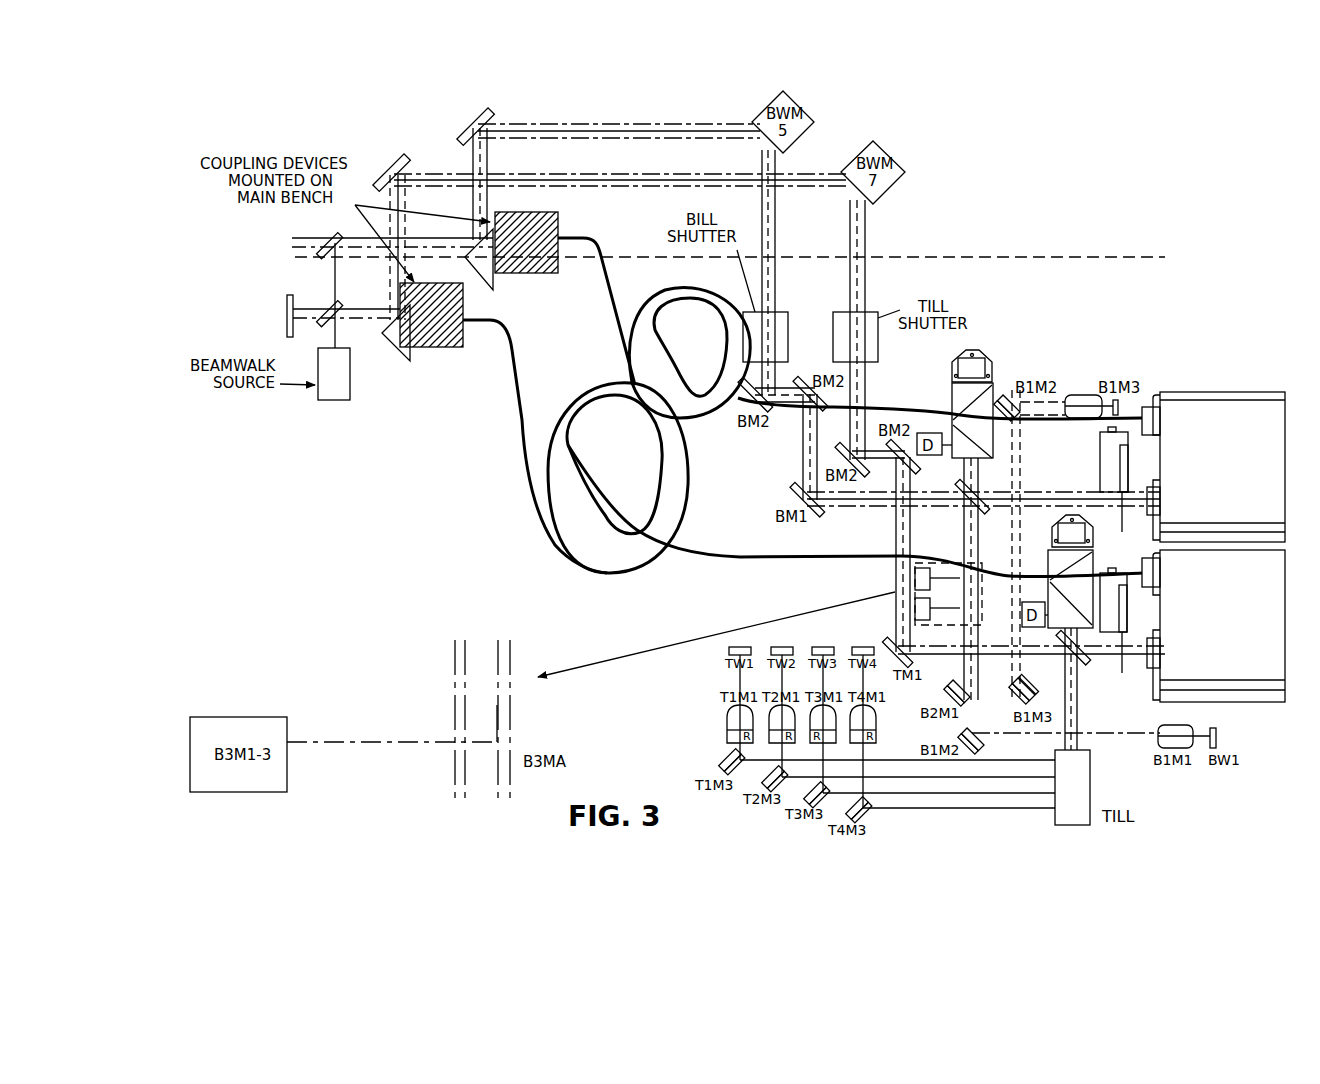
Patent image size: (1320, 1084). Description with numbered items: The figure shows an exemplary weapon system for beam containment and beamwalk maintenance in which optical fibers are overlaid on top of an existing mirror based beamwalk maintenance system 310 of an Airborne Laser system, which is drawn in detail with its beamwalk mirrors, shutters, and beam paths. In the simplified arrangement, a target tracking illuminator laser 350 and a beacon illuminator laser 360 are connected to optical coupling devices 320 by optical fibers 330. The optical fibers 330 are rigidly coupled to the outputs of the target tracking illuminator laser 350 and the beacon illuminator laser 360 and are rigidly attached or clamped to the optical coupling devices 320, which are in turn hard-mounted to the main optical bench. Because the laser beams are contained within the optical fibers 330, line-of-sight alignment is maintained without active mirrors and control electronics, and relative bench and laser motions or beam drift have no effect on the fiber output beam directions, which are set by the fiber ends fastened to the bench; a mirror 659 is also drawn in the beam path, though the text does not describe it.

The mirror based beamwalk maintenance system 310 is at (972, 247).
The optical coupling devices 320 is at (538, 273).
The optical fibers 330 is at (681, 286).
The target tracking illuminator laser 350 is at (1245, 668).
The beacon illuminator laser 360 is at (1222, 415).
The mirror 659 is at (1086, 656).